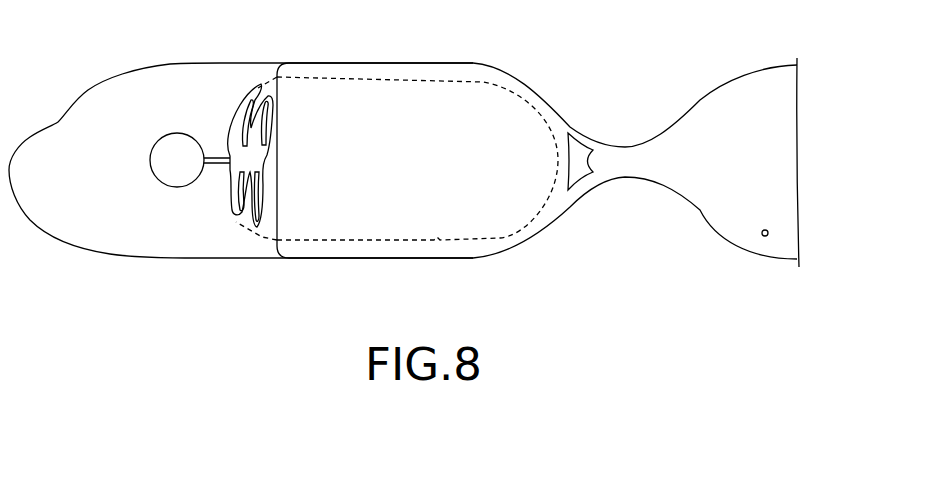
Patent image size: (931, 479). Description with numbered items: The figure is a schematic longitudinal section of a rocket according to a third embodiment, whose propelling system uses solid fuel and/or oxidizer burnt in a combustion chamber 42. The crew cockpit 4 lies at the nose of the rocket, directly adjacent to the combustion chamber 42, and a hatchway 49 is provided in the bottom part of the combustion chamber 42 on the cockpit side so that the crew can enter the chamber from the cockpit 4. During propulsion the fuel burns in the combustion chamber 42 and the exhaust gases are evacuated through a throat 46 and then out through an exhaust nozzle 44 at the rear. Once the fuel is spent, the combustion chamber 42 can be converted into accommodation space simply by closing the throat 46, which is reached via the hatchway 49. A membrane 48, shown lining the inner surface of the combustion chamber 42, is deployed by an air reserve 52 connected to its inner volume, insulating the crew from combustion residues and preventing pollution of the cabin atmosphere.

The cockpit 4 is at (105, 183).
The combustion chamber 42 is at (400, 63).
The exhaust nozzle 44 is at (766, 236).
The throat 46 is at (632, 170).
The membrane 48 is at (437, 251).
The hatchway 49 is at (277, 200).
The air reserve 52 is at (170, 172).